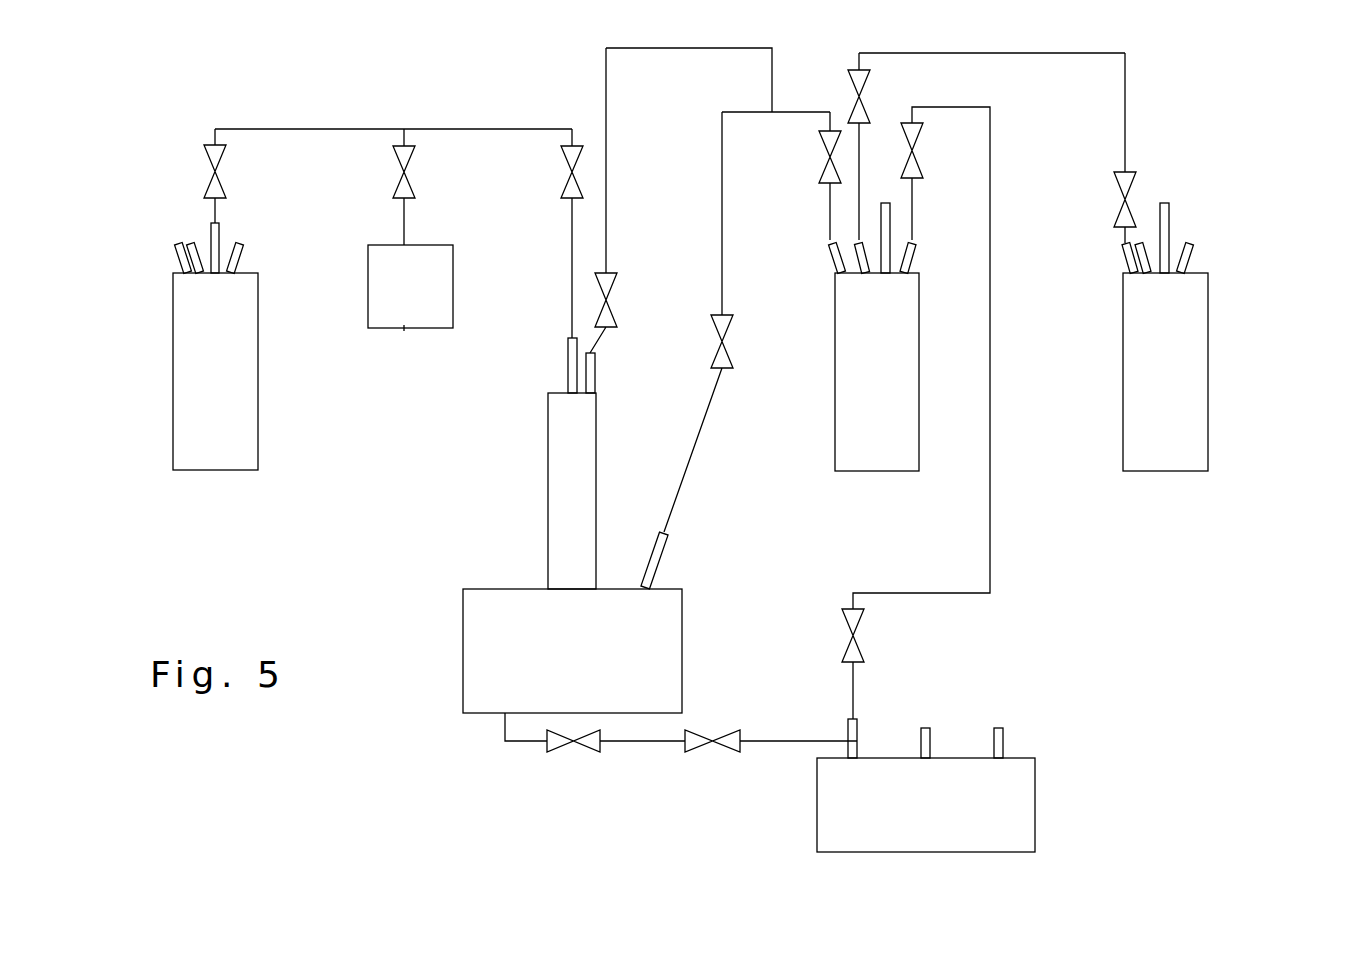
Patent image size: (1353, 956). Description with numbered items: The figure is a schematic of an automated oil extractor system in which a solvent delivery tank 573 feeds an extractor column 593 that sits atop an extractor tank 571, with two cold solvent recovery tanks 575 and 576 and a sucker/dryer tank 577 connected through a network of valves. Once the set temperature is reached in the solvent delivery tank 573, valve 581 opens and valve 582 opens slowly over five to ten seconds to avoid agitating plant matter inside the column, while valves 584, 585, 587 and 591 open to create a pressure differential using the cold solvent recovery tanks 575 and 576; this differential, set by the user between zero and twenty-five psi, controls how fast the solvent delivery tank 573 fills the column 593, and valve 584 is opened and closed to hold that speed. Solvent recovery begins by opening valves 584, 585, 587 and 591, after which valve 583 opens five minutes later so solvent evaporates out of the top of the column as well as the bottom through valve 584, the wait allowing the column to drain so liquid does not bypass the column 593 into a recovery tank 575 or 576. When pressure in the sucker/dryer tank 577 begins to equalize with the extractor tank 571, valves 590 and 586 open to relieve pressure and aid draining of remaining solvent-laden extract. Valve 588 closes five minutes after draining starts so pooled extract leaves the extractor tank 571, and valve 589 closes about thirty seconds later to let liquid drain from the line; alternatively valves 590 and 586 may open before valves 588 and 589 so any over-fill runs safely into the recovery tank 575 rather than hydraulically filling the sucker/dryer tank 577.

The extractor tank 571 is at (478, 665).
The solvent delivery tank 573 is at (243, 417).
The cold solvent recovery tank 575 is at (845, 438).
The cold solvent recovery tank 576 is at (1195, 330).
The sucker/dryer tank 577 is at (1027, 775).
The valve 581 is at (205, 163).
The valve 582 is at (572, 190).
The valve 583 is at (615, 283).
The valve 584 is at (722, 352).
The valve 585 is at (832, 166).
The valve 586 is at (914, 165).
The valve 587 is at (848, 80).
The valve 588 is at (558, 745).
The valve 589 is at (700, 735).
The valve 590 is at (862, 620).
The valve 591 is at (1135, 178).
The extractor column 593 is at (563, 492).